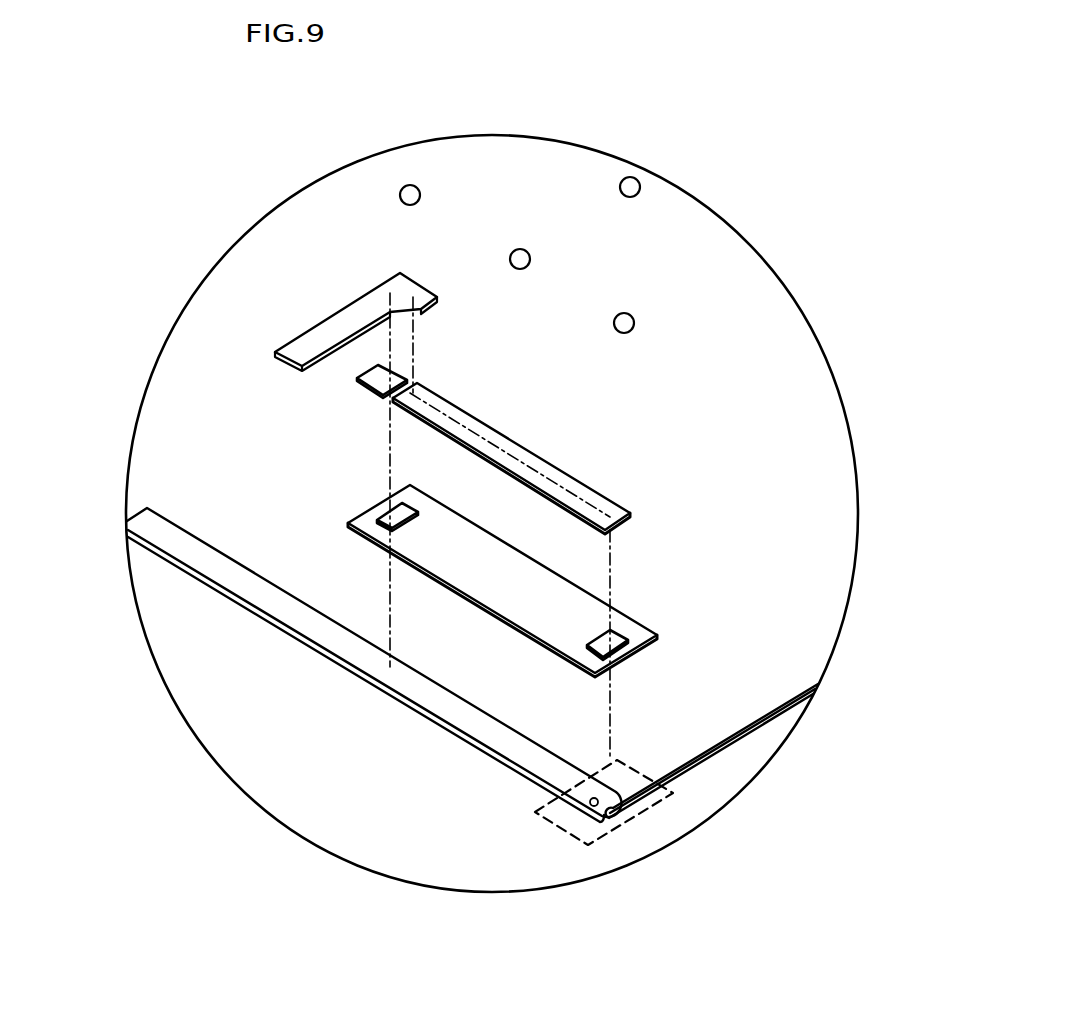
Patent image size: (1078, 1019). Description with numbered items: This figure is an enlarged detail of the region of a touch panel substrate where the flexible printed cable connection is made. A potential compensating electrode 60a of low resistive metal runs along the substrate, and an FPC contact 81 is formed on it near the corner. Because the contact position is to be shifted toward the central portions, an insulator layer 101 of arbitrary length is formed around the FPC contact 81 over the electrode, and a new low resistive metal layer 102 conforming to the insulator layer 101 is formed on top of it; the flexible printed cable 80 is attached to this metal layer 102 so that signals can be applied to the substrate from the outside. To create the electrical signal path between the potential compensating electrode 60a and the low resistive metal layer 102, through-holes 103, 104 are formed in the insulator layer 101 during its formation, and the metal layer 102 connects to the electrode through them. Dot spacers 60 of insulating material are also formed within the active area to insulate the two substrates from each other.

The dot spacers 60 is at (638, 176).
The potential compensating electrode 60a is at (330, 637).
The flexible printed cable 80 is at (320, 333).
The FPC contact 81 is at (626, 817).
The insulator layer 101 is at (530, 605).
The low resistive metal layer 102 is at (427, 423).
The through-hole 103 is at (348, 523).
The through-hole 104 is at (593, 676).